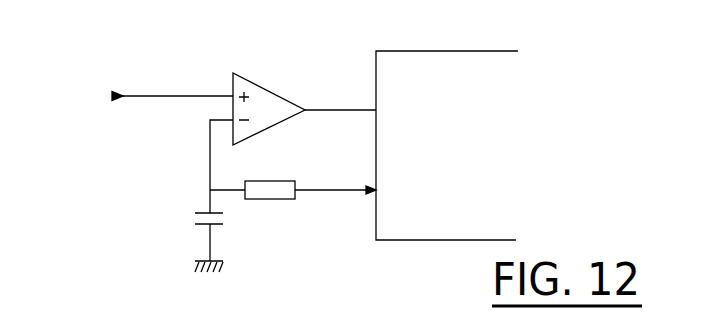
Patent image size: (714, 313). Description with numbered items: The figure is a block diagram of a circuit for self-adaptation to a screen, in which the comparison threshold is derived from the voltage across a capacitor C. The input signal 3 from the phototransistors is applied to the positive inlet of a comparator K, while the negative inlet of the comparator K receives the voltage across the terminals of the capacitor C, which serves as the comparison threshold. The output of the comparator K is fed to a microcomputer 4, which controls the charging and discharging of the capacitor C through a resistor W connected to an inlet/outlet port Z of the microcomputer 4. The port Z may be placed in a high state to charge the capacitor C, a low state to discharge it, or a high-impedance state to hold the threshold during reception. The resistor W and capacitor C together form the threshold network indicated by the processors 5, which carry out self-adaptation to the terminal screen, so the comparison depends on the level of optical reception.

The input signal 3 is at (109, 96).
The comparator K is at (268, 90).
The microcomputer 4 is at (427, 70).
The processors 5 is at (271, 242).
The resistor W is at (259, 199).
The inlet/outlet port Z is at (375, 191).
The capacitor C is at (206, 228).